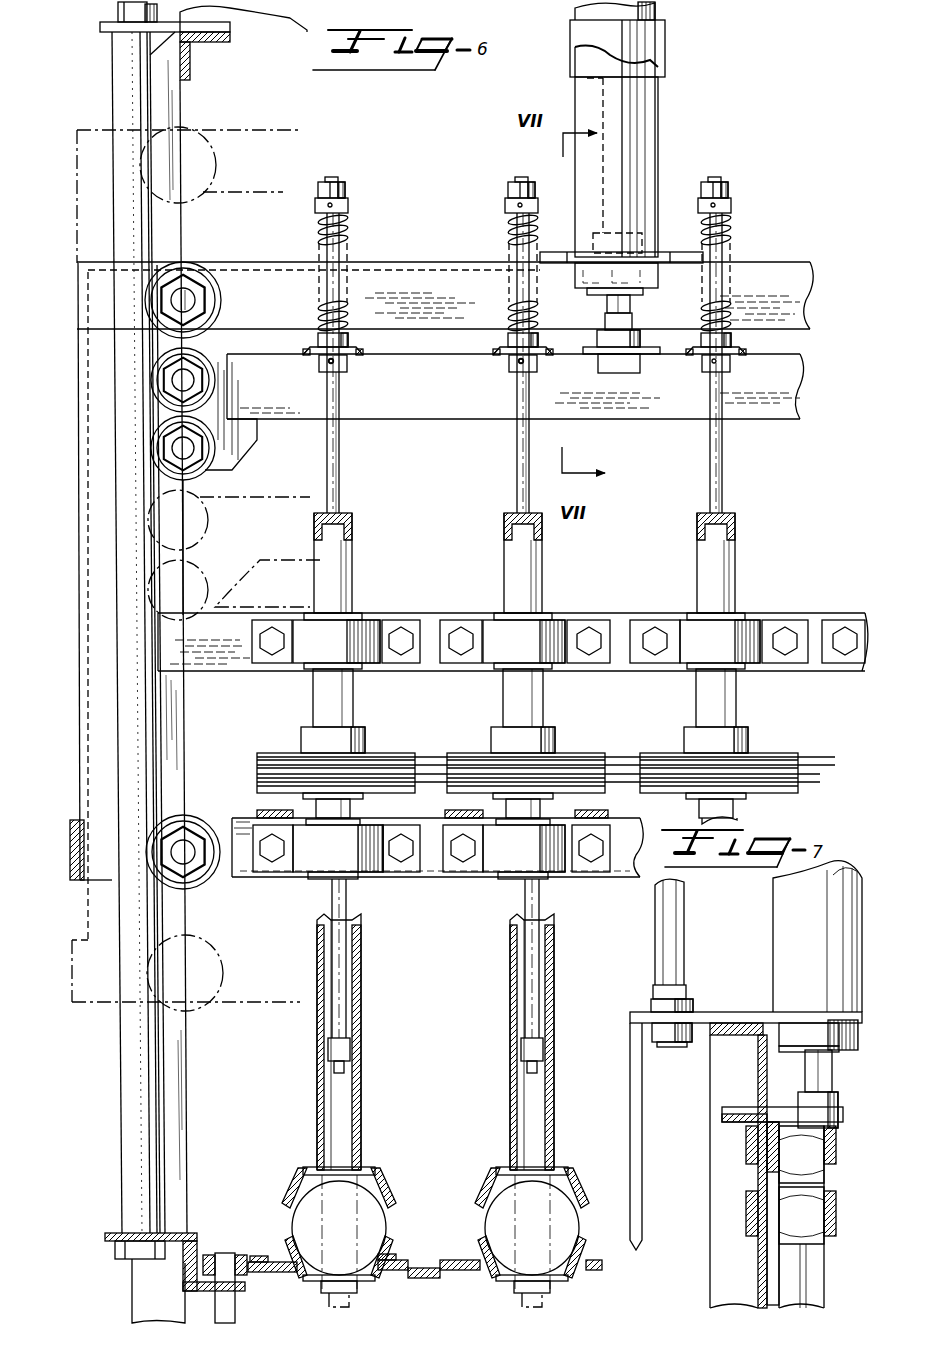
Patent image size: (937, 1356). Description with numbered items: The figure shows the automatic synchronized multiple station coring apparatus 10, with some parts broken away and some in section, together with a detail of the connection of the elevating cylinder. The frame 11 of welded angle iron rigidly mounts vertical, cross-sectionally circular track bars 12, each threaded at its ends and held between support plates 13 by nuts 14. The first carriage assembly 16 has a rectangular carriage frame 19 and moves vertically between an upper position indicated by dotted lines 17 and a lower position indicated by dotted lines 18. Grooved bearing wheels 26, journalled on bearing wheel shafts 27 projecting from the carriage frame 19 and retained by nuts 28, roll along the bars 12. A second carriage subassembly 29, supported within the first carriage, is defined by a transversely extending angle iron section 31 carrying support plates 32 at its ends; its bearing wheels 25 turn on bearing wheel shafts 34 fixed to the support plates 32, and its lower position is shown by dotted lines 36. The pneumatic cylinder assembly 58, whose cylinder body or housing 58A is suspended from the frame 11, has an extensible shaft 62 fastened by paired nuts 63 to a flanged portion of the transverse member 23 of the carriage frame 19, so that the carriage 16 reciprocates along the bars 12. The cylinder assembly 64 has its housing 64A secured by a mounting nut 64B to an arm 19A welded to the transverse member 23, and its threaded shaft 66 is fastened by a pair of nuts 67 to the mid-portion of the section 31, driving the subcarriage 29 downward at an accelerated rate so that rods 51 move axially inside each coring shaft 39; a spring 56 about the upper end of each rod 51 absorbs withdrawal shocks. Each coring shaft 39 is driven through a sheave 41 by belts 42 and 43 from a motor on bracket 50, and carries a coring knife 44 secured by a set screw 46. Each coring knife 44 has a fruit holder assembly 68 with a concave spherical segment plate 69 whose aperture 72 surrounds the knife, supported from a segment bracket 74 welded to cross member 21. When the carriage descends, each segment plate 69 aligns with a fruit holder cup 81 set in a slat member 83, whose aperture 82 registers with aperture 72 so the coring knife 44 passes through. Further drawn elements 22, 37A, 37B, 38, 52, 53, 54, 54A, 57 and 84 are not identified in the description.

In FIG. 6, the automatic synchronized multiple station coring apparatus 10 is at (405, 177).
In FIG. 6, the frame 11 is at (133, 1283).
In FIG. 6, the track bar 12 is at (112, 77).
In FIG. 7, the track bar 12 is at (806, 1266).
In FIG. 6, the support plate 13 is at (100, 29).
In FIG. 6, the nut 14 is at (118, 14).
In FIG. 6, the first carriage assembly 16 is at (770, 262).
In FIG. 6, the dotted lines 17 is at (77, 141).
In FIG. 6, the dotted lines 18 is at (80, 1010).
In FIG. 6, the carriage frame 19 is at (95, 568).
In FIG. 6, the arm 19A is at (650, 252).
In FIG. 7, the arm 19A is at (738, 1010).
In FIG. 6, the cross member segment 21 is at (426, 880).
In FIG. 6, the upper cross beam 22 is at (436, 672).
In FIG. 6, the transverse member 23 is at (418, 290).
In FIG. 7, the transverse member 23 is at (725, 1035).
In FIG. 6, the bearing wheel 25 is at (216, 380).
In FIG. 7, the bearing wheel 25 is at (818, 1143).
In FIG. 6, the bearing wheel 26 is at (221, 302).
In FIG. 6, the bearing wheel shaft 27 is at (186, 292).
In FIG. 6, the nut 28 is at (194, 298).
In FIG. 6, the second carriage subassembly 29 is at (445, 400).
In FIG. 6, the angle iron section 31 is at (422, 398).
In FIG. 7, the angle iron section 31 is at (722, 1112).
In FIG. 6, the support plate 32 is at (241, 437).
In FIG. 7, the support plate 32 is at (760, 1172).
In FIG. 6, the bearing wheel shaft 34 is at (162, 381).
In FIG. 6, the dotted lines 36 is at (272, 495).
In FIG. 6, the clamp block 37A is at (372, 625).
In FIG. 6, the clamp block 37B is at (310, 880).
In FIG. 6, the hex bolt 38 is at (270, 640).
In FIG. 6, the coring shaft 39 is at (346, 568).
In FIG. 6, the sheave 41 is at (362, 737).
In FIG. 6, the belt 42 is at (620, 755).
In FIG. 6, the belt 43 is at (625, 790).
In FIG. 6, the coring knife 44 is at (362, 1087).
In FIG. 6, the set screw 46 is at (314, 978).
In FIG. 6, the bracket 50 is at (687, 252).
In FIG. 7, the bracket 50 is at (636, 1014).
In FIG. 6, the rod 51 is at (341, 437).
In FIG. 6, the piston 52 is at (328, 1049).
In FIG. 6, the collar 53 is at (352, 348).
In FIG. 6, the block 54 is at (320, 365).
In FIG. 6, the pin 54A is at (330, 364).
In FIG. 6, the spring 56 is at (348, 236).
In FIG. 6, the nut 57 is at (346, 183).
In FIG. 6, the pneumatic cylinder assembly 58 is at (652, 35).
In FIG. 6, the cylinder body or housing 58A is at (660, 14).
In FIG. 6, the shaft 62 is at (645, 155).
In FIG. 7, the shaft 62 is at (655, 924).
In FIG. 6, the nuts 63 is at (592, 236).
In FIG. 7, the nuts 63 is at (688, 1022).
In FIG. 6, the cylinder assembly 64 is at (660, 115).
In FIG. 7, the cylinder assembly 64 is at (773, 906).
In FIG. 6, the cylinder body or housing 64A is at (581, 87).
In FIG. 6, the mounting nut 64B is at (575, 282).
In FIG. 7, the mounting nut 64B is at (858, 1040).
In FIG. 6, the shaft 66 is at (632, 302).
In FIG. 7, the shaft 66 is at (832, 1080).
In FIG. 6, the nuts 67 is at (645, 352).
In FIG. 7, the nuts 67 is at (838, 1108).
In FIG. 6, the fruit holder assembly 68 is at (386, 1182).
In FIG. 6, the spherical segment plate 69 is at (291, 1193).
In FIG. 6, the aperture 72 is at (330, 1178).
In FIG. 6, the segment bracket 74 is at (258, 808).
In FIG. 6, the fruit holder cup 81 is at (378, 1284).
In FIG. 6, the aperture 82 is at (310, 1284).
In FIG. 6, the slat member 83 is at (470, 1280).
In FIG. 6, the ball 84 is at (357, 1228).